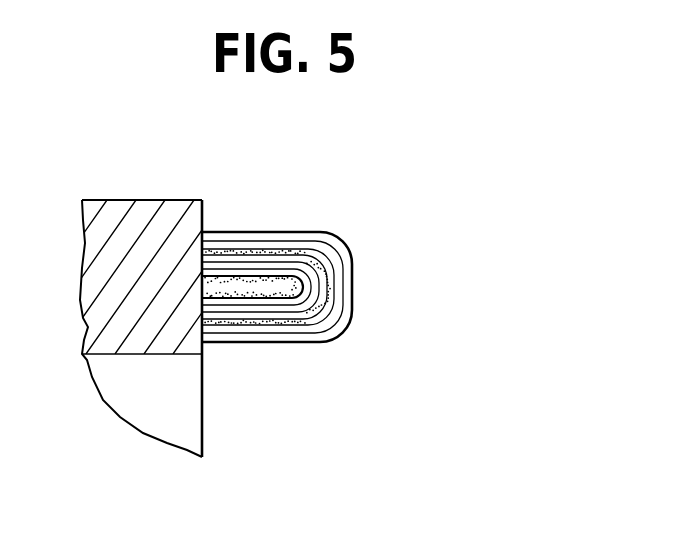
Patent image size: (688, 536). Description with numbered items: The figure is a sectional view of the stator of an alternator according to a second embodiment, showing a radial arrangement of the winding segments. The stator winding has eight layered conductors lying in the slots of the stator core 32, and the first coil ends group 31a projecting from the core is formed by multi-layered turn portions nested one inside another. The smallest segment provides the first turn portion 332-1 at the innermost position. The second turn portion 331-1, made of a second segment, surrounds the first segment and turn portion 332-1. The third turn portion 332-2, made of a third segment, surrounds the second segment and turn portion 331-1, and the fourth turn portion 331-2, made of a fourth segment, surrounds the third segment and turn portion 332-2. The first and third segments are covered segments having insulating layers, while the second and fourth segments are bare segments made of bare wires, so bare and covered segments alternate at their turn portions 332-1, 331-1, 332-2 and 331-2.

The stator core 32 is at (130, 218).
The first coil ends group 31a is at (357, 263).
The fourth turn portion 331-2 is at (338, 247).
The third turn portion 332-2 is at (333, 278).
The second turn portion 331-1 is at (313, 294).
The first turn portion 332-1 is at (328, 323).